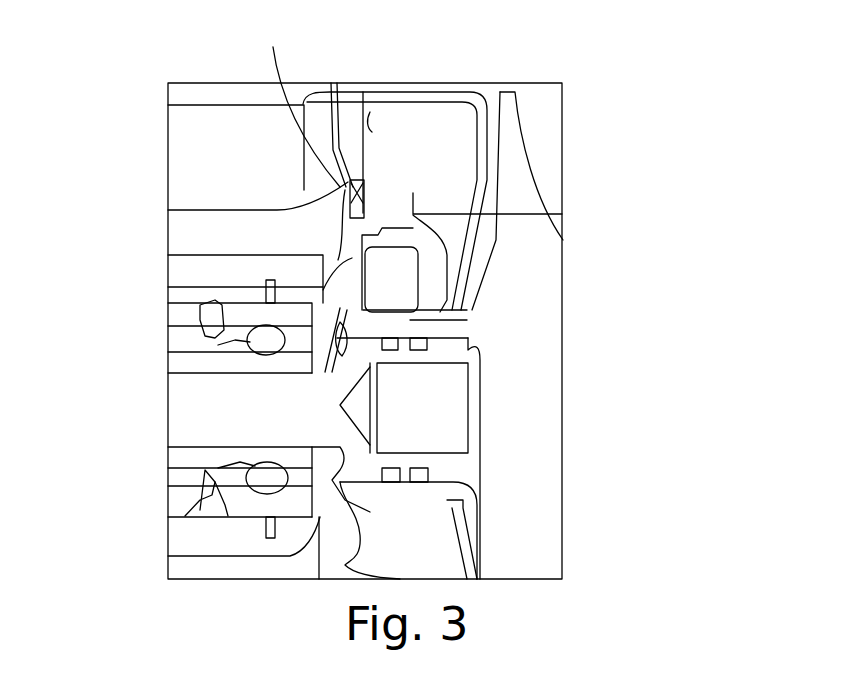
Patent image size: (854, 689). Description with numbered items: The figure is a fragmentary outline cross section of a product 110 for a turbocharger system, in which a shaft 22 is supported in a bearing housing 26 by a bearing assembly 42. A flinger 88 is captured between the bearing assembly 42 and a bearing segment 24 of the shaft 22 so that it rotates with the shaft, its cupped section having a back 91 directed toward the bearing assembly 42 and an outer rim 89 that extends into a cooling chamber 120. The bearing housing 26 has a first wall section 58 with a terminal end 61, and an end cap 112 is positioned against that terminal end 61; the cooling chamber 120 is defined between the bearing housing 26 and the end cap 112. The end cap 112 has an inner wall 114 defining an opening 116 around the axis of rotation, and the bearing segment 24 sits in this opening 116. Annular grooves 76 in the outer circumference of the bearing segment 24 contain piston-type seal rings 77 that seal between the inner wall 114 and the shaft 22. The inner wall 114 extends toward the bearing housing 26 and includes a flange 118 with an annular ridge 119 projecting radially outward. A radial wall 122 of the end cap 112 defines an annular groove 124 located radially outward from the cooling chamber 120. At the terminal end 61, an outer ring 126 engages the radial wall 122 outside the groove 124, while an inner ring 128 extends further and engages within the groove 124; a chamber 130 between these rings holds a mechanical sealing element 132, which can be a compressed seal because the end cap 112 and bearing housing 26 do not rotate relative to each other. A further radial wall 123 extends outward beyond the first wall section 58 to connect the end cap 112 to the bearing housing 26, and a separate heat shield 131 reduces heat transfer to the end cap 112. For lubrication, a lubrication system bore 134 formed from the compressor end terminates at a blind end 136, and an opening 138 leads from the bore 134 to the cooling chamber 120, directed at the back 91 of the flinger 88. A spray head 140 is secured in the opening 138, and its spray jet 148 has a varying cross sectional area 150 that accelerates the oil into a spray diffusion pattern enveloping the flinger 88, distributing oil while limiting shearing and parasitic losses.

The product 110 is at (163, 165).
The bearing housing 26 is at (184, 235).
The first wall section 58 is at (285, 240).
The lubrication system bore 134 is at (236, 284).
The shaft 22 is at (212, 427).
The spray head 140 is at (322, 278).
The varying cross sectional area 150 is at (322, 300).
The bearing assembly 42 is at (181, 323).
The spray jet 148 is at (320, 301).
The flinger 88 is at (322, 292).
The blind end 136 is at (320, 268).
The chamber 130 is at (332, 92).
The mechanical sealing element 132 is at (293, 108).
The radial wall 123 is at (363, 95).
The outer ring 126 is at (390, 187).
The terminal end 61 is at (371, 200).
The groove 124 is at (380, 218).
The heat shield 131 is at (480, 152).
The radial wall 122 is at (398, 200).
The inner ring 128 is at (558, 214).
The cooling chamber 120 is at (402, 289).
The back 91 is at (352, 252).
The opening 138 is at (338, 278).
The inner wall 114 is at (455, 322).
The annular ridge 119 is at (448, 318).
The outer rim 89 is at (442, 290).
The opening 116 is at (457, 333).
The piston-type seal rings 77 is at (417, 348).
The annular grooves 76 is at (418, 478).
The end cap 112 is at (440, 544).
The flange 118 is at (328, 372).
The bearing segment 24 is at (457, 457).